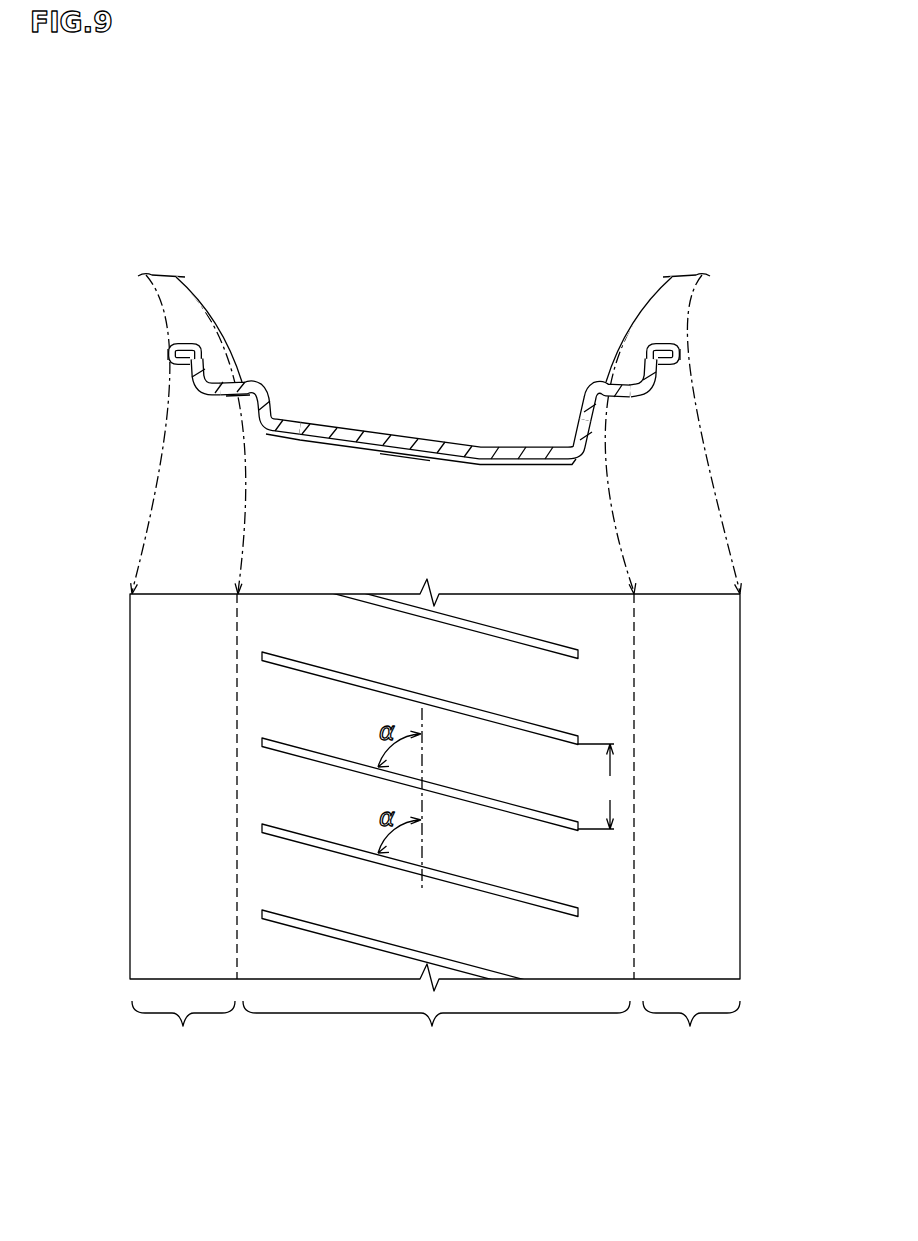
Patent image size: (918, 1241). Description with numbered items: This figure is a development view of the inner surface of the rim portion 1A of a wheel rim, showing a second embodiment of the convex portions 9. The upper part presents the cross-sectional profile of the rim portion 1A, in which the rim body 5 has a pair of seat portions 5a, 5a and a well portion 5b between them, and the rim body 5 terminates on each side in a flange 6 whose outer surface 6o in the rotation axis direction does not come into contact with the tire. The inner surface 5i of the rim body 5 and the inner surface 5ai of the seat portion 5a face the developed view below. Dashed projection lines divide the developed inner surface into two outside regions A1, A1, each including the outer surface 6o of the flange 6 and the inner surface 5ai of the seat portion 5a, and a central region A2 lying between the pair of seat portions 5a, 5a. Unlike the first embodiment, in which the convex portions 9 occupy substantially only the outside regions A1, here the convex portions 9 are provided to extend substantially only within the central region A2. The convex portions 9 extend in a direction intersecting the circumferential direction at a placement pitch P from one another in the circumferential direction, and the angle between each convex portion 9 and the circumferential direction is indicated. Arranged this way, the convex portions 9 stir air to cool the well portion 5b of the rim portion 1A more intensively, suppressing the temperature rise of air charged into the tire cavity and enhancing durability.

The rim portion 1A is at (243, 241).
The rim body 5 is at (555, 288).
The seat portion 5a is at (617, 380).
The well portion 5b is at (422, 432).
The inner surface of the seat portion 5ai is at (235, 350).
The inner surface of the rim body 5i is at (404, 456).
The flange 6 is at (656, 346).
The outer surface of the flange 6o is at (680, 362).
The convex portion 9 is at (313, 443).
The placement pitch P is at (597, 786).
The outside region A1 is at (436, 1029).
The central region A2 is at (436, 1029).